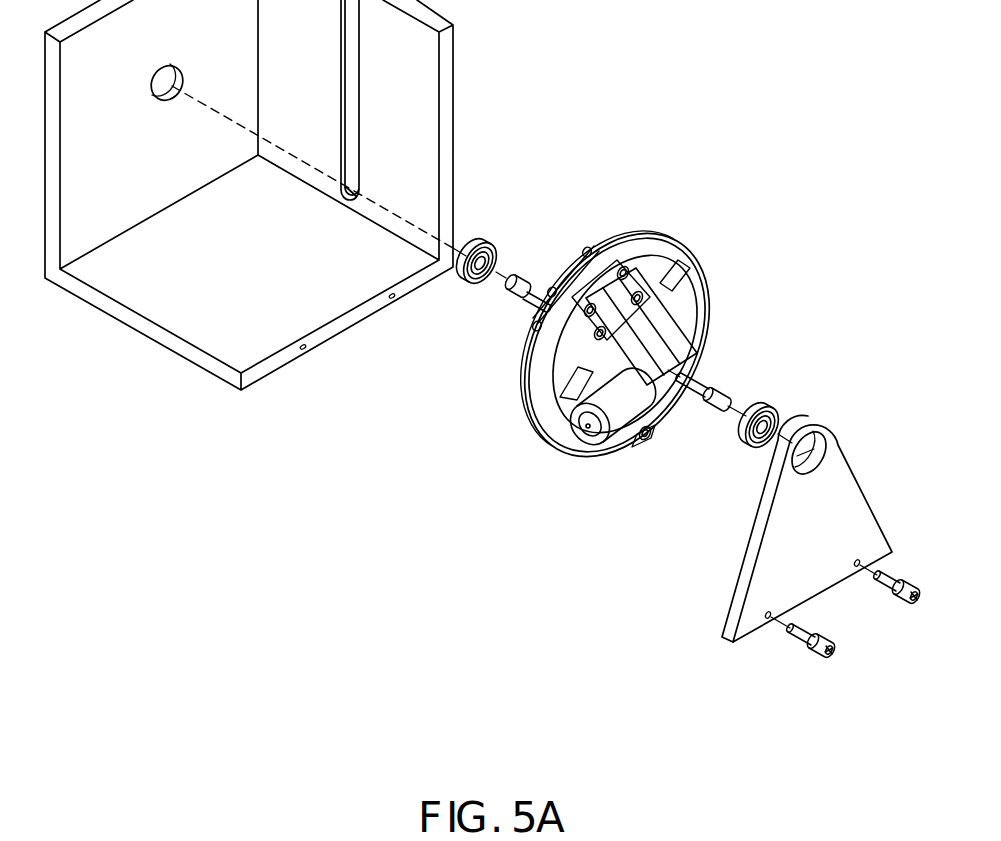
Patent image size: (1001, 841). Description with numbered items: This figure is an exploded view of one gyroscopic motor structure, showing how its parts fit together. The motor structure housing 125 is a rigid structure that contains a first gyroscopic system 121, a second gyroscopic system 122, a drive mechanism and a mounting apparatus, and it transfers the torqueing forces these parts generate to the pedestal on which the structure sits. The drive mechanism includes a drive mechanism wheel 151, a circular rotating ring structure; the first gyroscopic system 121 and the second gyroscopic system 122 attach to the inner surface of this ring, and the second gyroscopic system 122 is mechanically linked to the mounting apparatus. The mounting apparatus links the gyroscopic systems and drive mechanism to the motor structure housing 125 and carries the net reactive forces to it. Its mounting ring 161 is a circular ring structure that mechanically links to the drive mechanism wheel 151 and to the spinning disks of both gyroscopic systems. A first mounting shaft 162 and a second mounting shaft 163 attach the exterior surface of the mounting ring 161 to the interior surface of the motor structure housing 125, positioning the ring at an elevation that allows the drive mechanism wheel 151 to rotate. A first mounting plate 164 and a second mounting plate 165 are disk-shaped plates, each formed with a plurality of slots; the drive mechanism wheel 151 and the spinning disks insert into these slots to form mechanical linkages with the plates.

The first gyroscopic system 121 is at (628, 445).
The second gyroscopic system 122 is at (695, 293).
The motor structure housing 125 is at (453, 92).
The drive mechanism wheel 151 is at (567, 450).
The mounting ring 161 is at (697, 328).
The first mounting shaft 162 is at (707, 382).
The second mounting shaft 163 is at (532, 288).
The first mounting plate 164 is at (623, 266).
The second mounting plate 165 is at (592, 246).